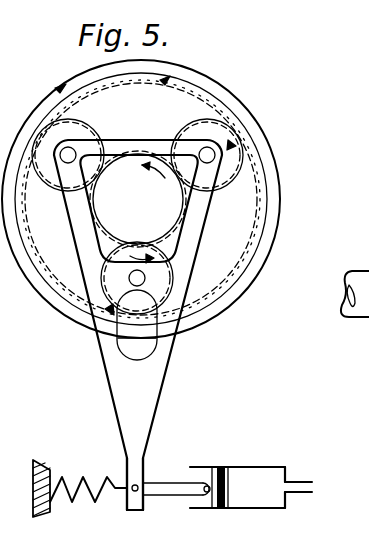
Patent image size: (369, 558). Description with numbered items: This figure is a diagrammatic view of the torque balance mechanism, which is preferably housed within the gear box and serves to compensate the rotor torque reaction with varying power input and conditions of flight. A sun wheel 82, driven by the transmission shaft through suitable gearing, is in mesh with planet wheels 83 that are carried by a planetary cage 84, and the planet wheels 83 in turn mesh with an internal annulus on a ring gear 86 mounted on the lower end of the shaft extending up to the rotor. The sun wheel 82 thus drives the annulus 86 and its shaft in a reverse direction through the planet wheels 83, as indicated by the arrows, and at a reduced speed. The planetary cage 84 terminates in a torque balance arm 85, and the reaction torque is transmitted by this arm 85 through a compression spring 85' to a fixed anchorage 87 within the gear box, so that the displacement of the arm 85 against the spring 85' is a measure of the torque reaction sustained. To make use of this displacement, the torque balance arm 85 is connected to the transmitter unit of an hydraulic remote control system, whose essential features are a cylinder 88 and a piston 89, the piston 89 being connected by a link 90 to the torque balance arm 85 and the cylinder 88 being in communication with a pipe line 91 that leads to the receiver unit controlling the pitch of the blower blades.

The sun wheel 82 is at (110, 238).
The planet wheels 83 is at (182, 127).
The planetary cage 84 is at (193, 230).
The torque balance arm 85 is at (171, 454).
The compression spring 85' is at (88, 515).
The ring gear 86 is at (253, 200).
The fixed anchorage 87 is at (38, 460).
The cylinder 88 is at (260, 508).
The piston 89 is at (218, 498).
The link 90 is at (165, 498).
The pipe line 91 is at (302, 495).